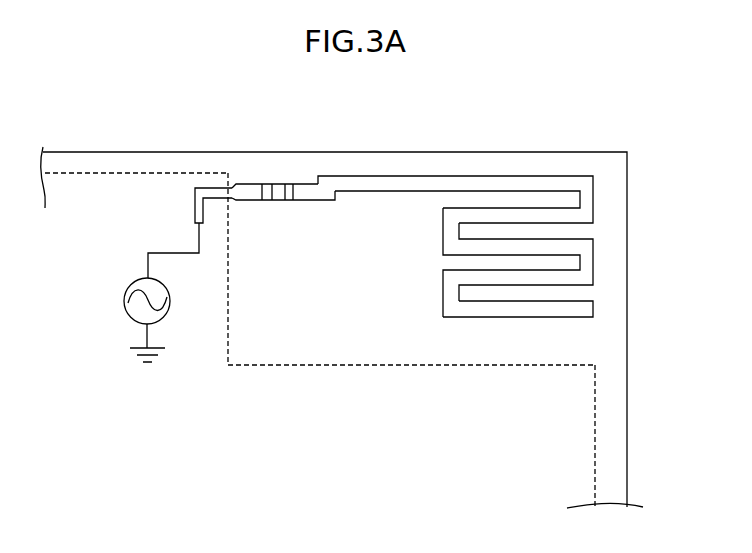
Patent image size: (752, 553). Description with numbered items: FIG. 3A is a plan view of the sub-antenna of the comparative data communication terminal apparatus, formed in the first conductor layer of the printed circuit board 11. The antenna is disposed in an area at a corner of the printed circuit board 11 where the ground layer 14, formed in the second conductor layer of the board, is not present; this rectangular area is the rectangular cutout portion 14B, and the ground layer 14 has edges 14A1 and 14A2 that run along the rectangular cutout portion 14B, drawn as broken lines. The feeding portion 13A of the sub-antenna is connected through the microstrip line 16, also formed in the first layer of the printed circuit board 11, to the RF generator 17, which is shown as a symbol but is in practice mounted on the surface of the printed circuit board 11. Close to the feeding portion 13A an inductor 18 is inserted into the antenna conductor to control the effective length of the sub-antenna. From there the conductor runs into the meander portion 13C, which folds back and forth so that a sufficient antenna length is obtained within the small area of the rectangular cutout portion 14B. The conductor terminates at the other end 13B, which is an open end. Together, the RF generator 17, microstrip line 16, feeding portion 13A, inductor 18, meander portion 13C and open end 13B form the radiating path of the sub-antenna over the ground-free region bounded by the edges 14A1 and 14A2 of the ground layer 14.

The printed circuit board 11 is at (612, 250).
The feeding portion 13A is at (253, 188).
The other end 13B is at (587, 308).
The meander portion 13C is at (587, 204).
The ground layer 14 is at (580, 446).
The edge 14A1 is at (370, 367).
The edge 14A2 is at (225, 332).
The rectangular cutout portion 14B is at (313, 332).
The microstrip line 16 is at (193, 203).
The RF generator 17 is at (124, 302).
The inductor 18 is at (281, 202).